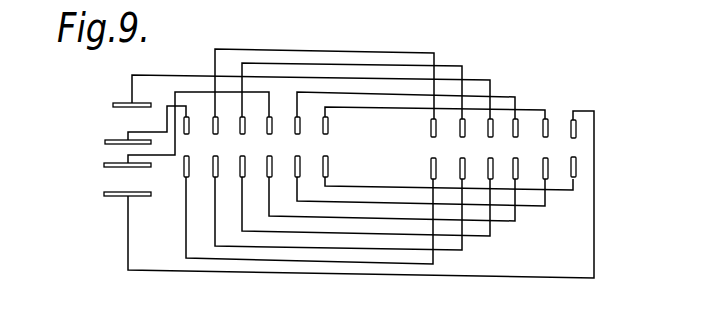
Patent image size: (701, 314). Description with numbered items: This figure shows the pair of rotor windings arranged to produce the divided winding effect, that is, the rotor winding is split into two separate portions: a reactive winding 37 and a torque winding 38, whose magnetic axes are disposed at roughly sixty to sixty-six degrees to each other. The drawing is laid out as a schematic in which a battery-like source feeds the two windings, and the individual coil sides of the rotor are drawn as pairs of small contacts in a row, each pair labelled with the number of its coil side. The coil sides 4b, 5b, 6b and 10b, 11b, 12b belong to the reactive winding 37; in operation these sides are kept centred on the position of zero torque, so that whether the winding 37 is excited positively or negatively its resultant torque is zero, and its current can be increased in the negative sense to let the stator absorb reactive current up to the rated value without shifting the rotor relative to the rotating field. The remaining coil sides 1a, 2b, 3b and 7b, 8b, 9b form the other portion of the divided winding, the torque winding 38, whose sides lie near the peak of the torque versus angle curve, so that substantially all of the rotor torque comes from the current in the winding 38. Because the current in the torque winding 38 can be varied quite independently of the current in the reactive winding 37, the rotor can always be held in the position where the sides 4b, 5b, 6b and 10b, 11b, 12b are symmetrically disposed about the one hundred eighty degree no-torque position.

The contact pair 1a is at (184, 145).
The contact pair 2b is at (211, 145).
The contact pair 3b is at (239, 145).
The coil side 4b is at (266, 145).
The coil side 5b is at (294, 145).
The coil side 6b is at (322, 145).
The contact pair 7b is at (424, 149).
The contact pair 8b is at (463, 146).
The contact pair 9b is at (480, 149).
The coil side 10b is at (505, 149).
The coil side 11b is at (547, 147).
The coil side 12b is at (563, 148).
The reactive winding 37 is at (127, 244).
The torque winding 38 is at (149, 72).